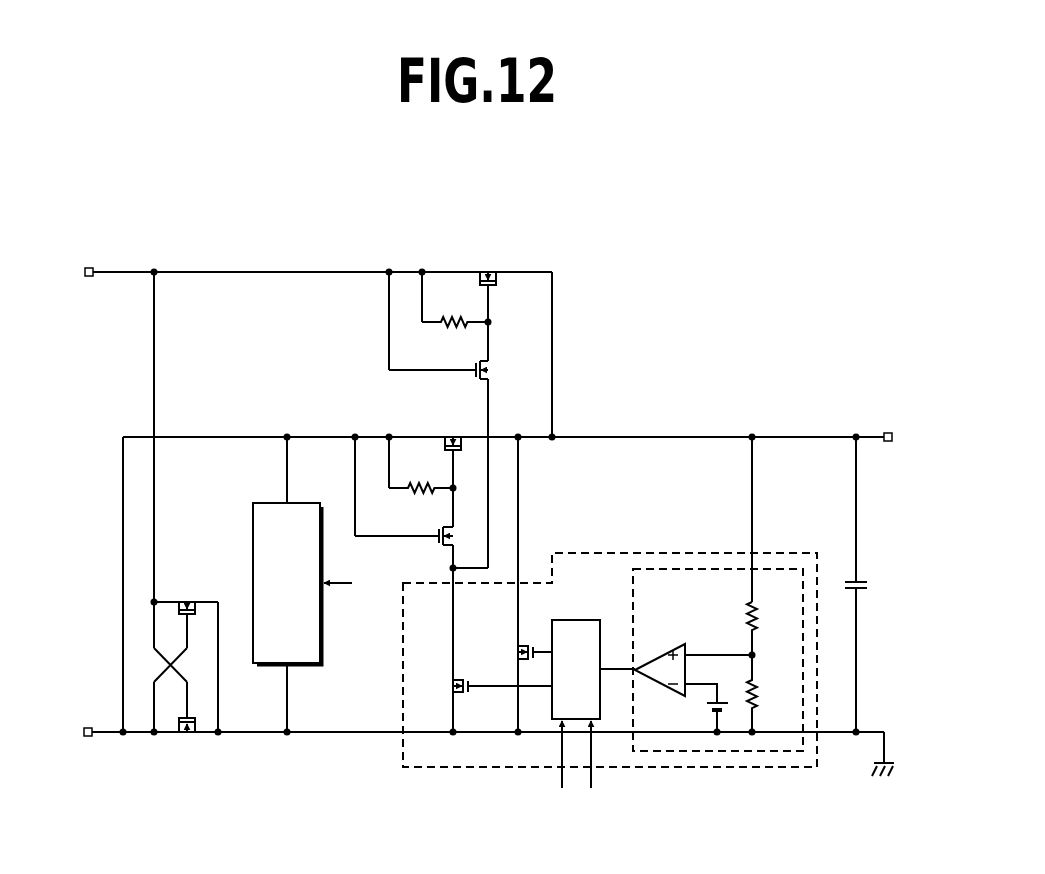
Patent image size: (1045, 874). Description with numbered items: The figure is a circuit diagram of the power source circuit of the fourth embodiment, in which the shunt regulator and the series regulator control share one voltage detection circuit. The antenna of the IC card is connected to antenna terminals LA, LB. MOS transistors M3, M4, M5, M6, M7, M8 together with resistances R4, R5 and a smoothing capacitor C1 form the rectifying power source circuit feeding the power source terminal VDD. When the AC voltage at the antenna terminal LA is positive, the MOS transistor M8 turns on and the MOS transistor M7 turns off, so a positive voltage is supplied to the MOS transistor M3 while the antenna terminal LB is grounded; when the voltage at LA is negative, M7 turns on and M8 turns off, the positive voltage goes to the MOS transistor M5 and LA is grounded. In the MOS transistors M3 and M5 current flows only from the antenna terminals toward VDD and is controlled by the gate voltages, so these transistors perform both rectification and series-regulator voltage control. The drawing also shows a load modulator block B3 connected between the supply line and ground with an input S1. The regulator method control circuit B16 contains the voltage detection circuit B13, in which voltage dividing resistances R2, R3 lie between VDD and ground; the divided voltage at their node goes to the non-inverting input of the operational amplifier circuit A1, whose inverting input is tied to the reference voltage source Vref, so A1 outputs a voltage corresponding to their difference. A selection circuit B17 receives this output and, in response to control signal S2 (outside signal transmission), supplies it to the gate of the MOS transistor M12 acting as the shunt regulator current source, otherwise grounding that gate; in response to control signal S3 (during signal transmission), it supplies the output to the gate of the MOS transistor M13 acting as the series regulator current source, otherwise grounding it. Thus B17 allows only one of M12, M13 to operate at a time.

The antenna terminal LA is at (85, 266).
The antenna terminal LB is at (85, 737).
The power source terminal VDD is at (880, 432).
The MOS transistor M3 is at (490, 265).
The resistance R4 is at (455, 311).
The MOS transistor M4 is at (438, 363).
The MOS transistor M5 is at (457, 430).
The resistance R5 is at (421, 477).
The MOS transistor M6 is at (404, 528).
The load modulator B3 is at (300, 503).
The load modulation control signal S1 is at (353, 585).
The MOS transistor M7 is at (177, 628).
The MOS transistor M8 is at (187, 720).
The regulator method control circuit B16 is at (652, 553).
The voltage detection circuit B13 is at (780, 569).
The selection circuit B17 is at (575, 620).
The MOS transistor M12 is at (513, 653).
The MOS transistor M13 is at (481, 688).
The control signal S2 is at (562, 769).
The control signal S3 is at (592, 769).
The operational amplifier circuit A1 is at (688, 642).
The reference voltage source Vref is at (696, 716).
The voltage dividing resistance R2 is at (768, 628).
The voltage dividing resistance R3 is at (768, 693).
The smoothing capacitor C1 is at (875, 585).